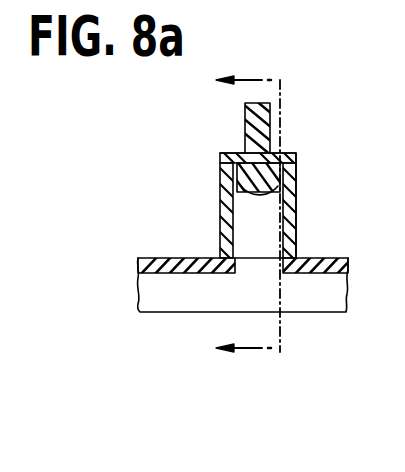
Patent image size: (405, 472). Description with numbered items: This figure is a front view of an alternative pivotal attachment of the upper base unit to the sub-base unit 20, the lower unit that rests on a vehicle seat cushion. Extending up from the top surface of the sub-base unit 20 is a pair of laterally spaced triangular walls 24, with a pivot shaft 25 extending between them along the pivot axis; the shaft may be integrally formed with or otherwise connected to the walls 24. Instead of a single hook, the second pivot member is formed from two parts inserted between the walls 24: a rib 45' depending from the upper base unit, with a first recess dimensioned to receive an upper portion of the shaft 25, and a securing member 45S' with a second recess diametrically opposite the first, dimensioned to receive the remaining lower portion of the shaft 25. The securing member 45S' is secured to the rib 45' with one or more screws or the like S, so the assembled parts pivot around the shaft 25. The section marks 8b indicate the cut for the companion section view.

The sub-base unit 20 is at (320, 288).
The triangular walls 24 is at (220, 216).
The pivot shaft 25 is at (295, 153).
The rib 45' is at (227, 122).
The securing member 45S' is at (224, 145).
The screw S is at (236, 186).
The section line 8b is at (248, 219).